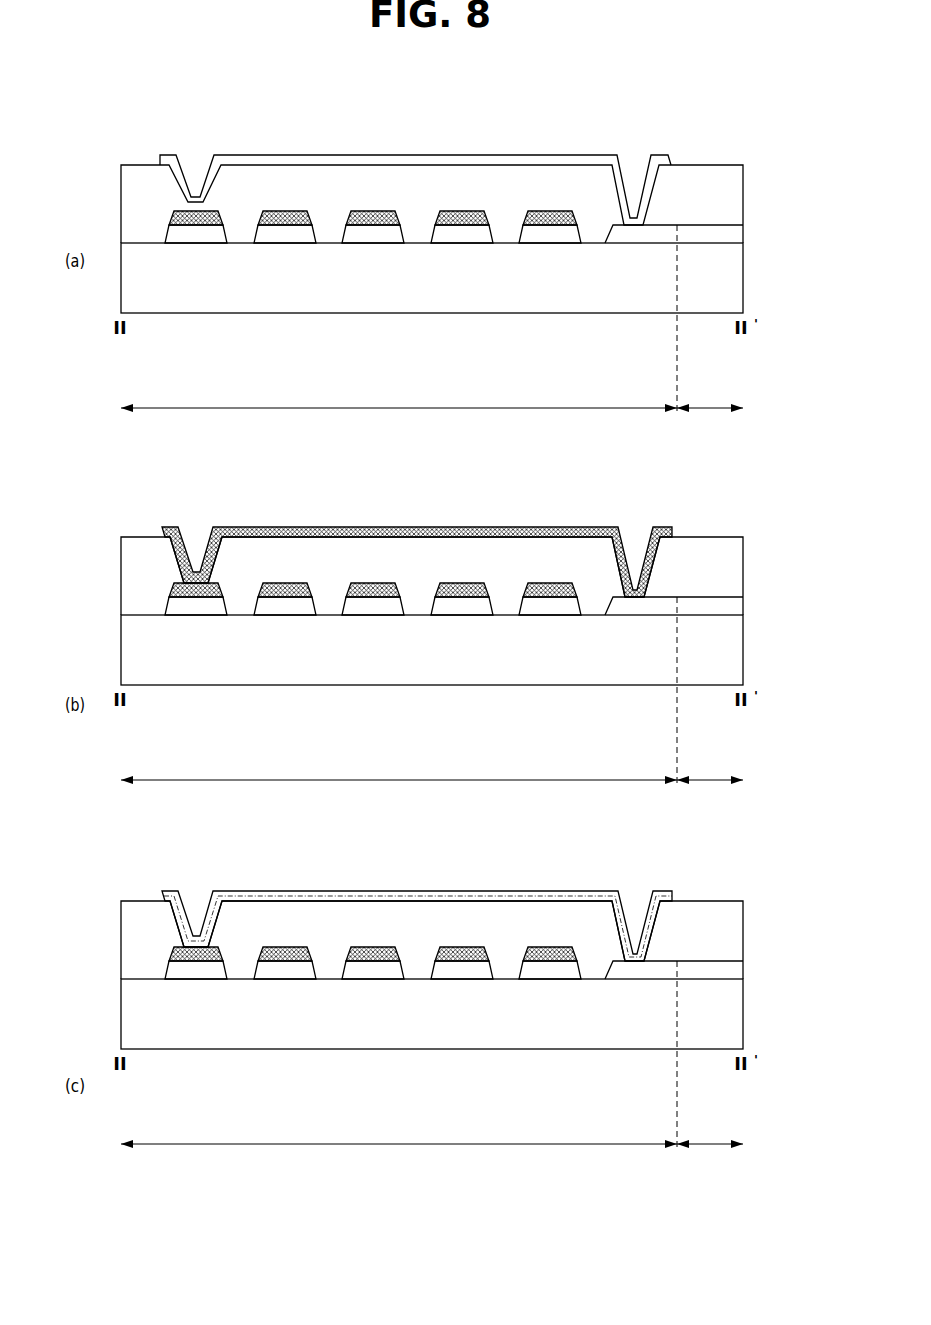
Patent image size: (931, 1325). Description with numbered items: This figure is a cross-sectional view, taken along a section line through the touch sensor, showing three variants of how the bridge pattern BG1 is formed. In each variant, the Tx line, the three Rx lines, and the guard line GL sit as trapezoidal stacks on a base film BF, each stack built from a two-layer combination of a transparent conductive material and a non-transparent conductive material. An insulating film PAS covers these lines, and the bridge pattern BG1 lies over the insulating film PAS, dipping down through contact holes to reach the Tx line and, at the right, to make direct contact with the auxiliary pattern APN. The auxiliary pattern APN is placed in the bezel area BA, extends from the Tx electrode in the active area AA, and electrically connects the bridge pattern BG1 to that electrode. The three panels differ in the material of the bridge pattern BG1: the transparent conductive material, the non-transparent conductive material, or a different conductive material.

The buffer layer BF is at (738, 278).
The insulating film PAS is at (738, 200).
The bridge pattern BG1 is at (417, 158).
The guard line GL is at (285, 669).
The auxiliary pattern APN is at (648, 235).
The bezel area BA is at (399, 788).
The active area AA is at (710, 698).